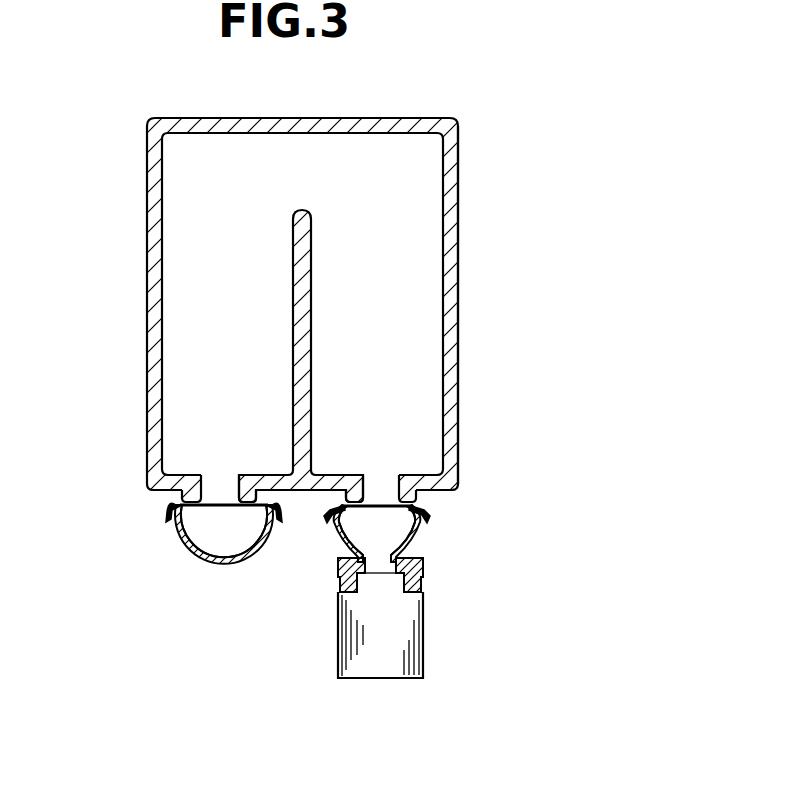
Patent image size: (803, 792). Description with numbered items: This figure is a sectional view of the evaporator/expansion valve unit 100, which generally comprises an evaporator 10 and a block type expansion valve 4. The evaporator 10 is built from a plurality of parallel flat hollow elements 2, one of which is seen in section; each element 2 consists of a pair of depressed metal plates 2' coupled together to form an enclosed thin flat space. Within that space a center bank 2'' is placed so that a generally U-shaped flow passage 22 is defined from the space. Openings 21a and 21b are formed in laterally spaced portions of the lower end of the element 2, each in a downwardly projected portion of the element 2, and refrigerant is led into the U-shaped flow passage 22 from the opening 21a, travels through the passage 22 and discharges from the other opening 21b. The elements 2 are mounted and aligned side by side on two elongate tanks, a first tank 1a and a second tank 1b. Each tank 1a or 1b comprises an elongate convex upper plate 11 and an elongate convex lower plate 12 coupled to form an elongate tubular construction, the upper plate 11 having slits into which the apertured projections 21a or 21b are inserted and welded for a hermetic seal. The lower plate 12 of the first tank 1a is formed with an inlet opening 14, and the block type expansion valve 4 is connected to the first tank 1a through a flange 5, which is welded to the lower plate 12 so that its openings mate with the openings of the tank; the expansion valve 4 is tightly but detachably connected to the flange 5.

The evaporator/expansion valve unit 100 is at (543, 100).
The evaporator 10 is at (458, 377).
The flat hollow element 2 is at (333, 304).
The depressed metal plate 2' is at (493, 305).
The center bank 2'' is at (309, 356).
The U-shaped flow passage 22 is at (413, 293).
The opening 21a is at (382, 498).
The opening 21b is at (223, 498).
The upper plate 11 is at (177, 508).
The lower plate 12 is at (212, 563).
The first tank 1a is at (460, 517).
The second tank 1b is at (172, 556).
The flange 5 is at (422, 558).
The block type expansion valve 4 is at (425, 638).
The inlet opening 14 is at (382, 560).